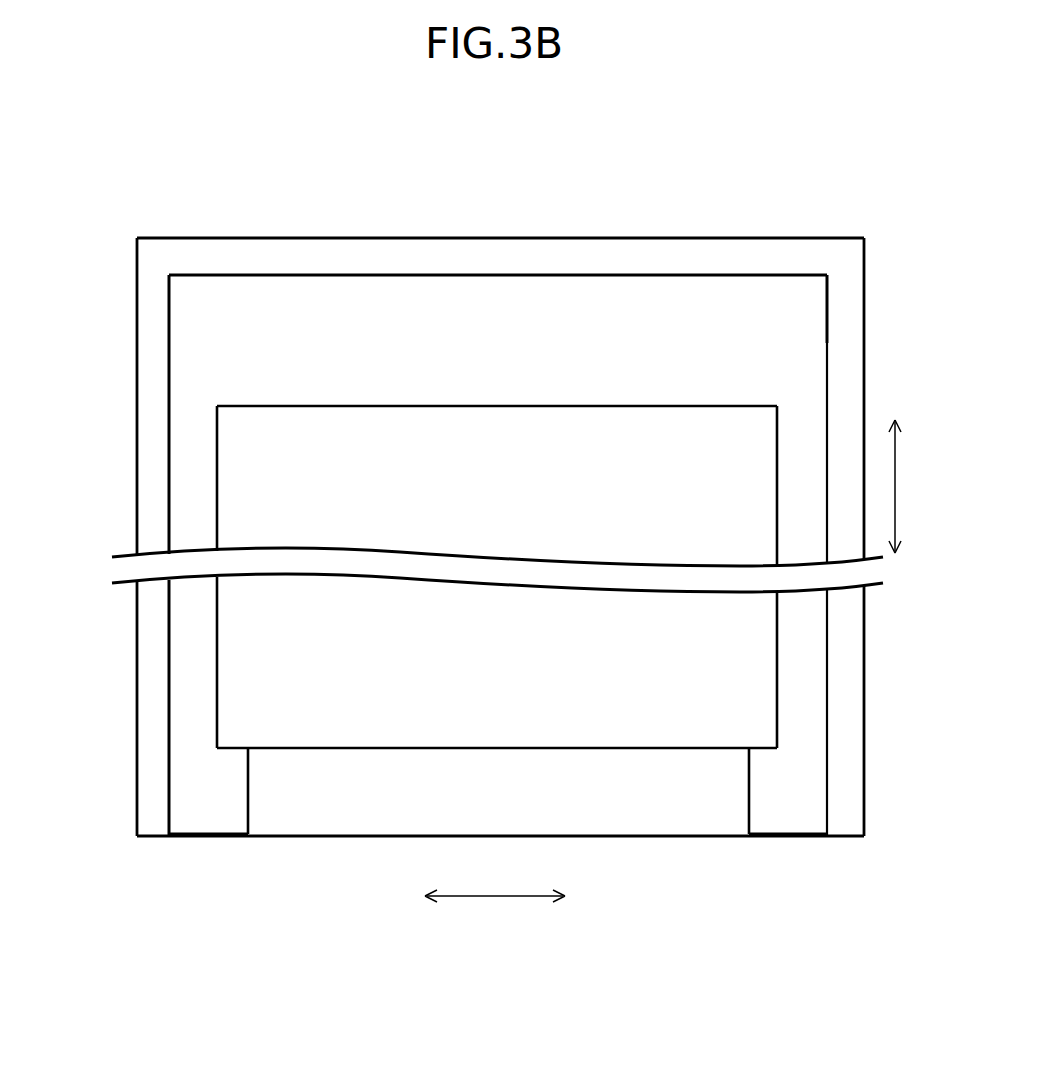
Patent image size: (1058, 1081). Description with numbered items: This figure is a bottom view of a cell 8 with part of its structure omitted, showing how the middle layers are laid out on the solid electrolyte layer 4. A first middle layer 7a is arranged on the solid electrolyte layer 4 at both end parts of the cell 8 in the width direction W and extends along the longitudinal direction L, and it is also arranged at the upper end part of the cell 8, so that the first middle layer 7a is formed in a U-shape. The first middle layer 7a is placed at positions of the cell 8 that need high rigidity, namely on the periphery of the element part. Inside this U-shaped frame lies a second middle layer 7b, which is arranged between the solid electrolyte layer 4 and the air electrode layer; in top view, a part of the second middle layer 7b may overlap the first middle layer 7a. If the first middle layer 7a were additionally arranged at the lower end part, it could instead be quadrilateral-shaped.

The cell 8 is at (850, 197).
The solid electrolyte layer 4 is at (170, 250).
The first middle layer 7a is at (355, 350).
The second middle layer 7b is at (275, 628).